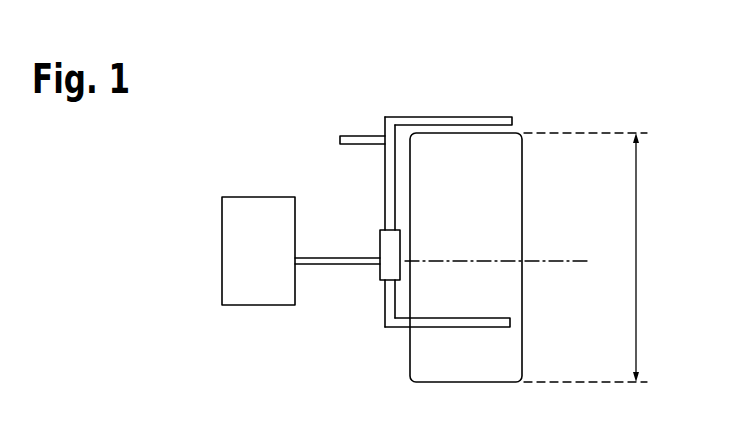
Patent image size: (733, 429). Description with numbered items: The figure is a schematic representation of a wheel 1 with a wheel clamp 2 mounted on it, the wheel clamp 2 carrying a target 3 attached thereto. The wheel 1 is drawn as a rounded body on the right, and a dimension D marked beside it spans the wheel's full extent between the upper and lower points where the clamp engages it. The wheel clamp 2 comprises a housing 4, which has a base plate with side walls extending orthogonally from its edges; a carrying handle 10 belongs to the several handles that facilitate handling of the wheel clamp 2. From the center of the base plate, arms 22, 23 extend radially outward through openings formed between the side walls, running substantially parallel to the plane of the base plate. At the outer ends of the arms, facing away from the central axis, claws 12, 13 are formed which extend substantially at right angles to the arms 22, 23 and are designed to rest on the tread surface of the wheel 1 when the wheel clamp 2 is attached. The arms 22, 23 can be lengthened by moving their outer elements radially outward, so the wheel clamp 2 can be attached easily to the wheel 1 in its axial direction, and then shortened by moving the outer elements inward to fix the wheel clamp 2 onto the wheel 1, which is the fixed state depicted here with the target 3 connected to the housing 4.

The wheel 1 is at (505, 158).
The wheel clamp 2 is at (425, 215).
The target 3 is at (235, 258).
The housing 4 is at (385, 232).
The carrying handle 10 is at (358, 100).
The claw 12 is at (506, 100).
The claw 13 is at (398, 332).
The arm 22 is at (390, 172).
The arm 23 is at (392, 311).
The diameter dimension D is at (596, 257).